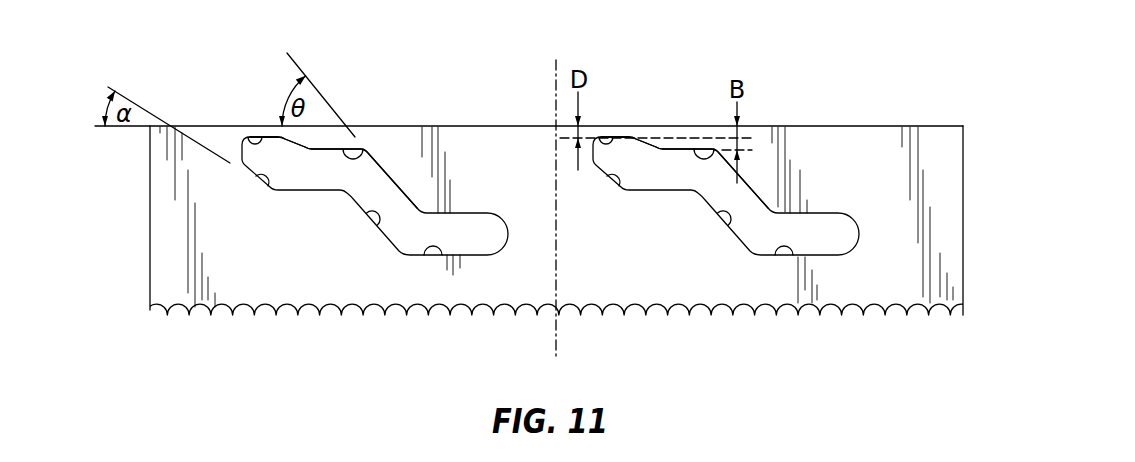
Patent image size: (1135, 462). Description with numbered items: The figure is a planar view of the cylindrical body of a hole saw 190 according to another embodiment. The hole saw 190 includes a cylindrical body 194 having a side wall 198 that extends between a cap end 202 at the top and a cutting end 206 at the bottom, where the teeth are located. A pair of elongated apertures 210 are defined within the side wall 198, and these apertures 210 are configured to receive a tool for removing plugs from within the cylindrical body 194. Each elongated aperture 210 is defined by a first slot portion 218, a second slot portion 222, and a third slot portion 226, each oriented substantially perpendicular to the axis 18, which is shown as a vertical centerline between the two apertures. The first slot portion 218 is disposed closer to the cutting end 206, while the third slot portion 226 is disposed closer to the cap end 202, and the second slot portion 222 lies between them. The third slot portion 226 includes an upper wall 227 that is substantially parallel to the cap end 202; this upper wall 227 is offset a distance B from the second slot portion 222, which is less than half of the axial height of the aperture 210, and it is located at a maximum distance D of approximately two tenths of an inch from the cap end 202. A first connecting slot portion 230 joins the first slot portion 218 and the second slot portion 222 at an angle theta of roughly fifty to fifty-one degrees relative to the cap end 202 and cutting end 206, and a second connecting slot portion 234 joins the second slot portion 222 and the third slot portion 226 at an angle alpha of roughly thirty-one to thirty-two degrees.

The hole saw 190 is at (551, 191).
The axis 18 is at (553, 97).
The cylindrical body 194 is at (963, 157).
The side wall 198 is at (937, 157).
The cap end 202 is at (808, 126).
The cutting end 206 is at (852, 318).
The elongated aperture 210 is at (394, 262).
The first slot portion 218 is at (430, 250).
The second slot portion 222 is at (364, 152).
The third slot portion 226 is at (243, 141).
The upper wall 227 is at (273, 136).
The first connecting slot portion 230 is at (363, 217).
The second connecting slot portion 234 is at (272, 192).